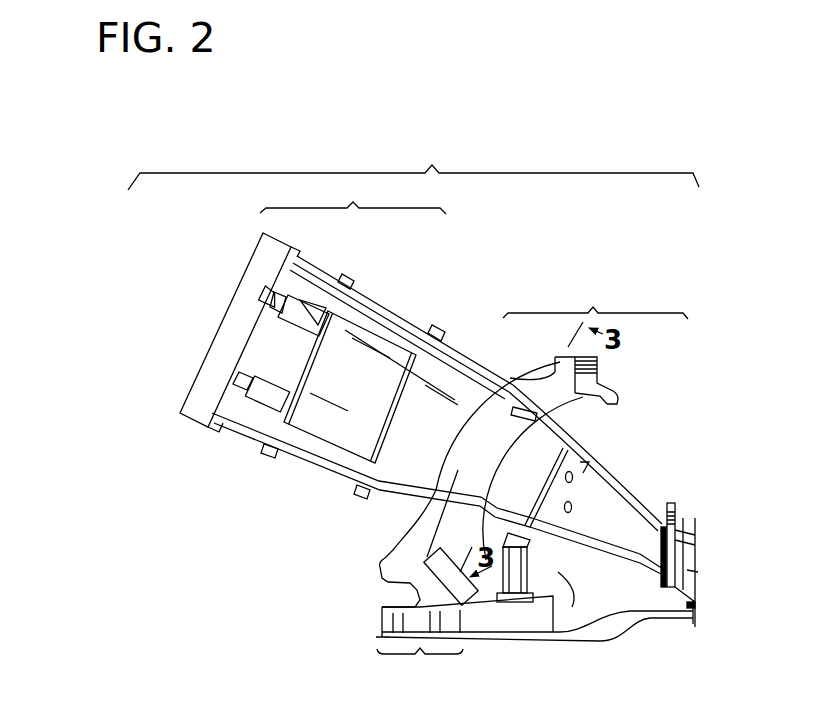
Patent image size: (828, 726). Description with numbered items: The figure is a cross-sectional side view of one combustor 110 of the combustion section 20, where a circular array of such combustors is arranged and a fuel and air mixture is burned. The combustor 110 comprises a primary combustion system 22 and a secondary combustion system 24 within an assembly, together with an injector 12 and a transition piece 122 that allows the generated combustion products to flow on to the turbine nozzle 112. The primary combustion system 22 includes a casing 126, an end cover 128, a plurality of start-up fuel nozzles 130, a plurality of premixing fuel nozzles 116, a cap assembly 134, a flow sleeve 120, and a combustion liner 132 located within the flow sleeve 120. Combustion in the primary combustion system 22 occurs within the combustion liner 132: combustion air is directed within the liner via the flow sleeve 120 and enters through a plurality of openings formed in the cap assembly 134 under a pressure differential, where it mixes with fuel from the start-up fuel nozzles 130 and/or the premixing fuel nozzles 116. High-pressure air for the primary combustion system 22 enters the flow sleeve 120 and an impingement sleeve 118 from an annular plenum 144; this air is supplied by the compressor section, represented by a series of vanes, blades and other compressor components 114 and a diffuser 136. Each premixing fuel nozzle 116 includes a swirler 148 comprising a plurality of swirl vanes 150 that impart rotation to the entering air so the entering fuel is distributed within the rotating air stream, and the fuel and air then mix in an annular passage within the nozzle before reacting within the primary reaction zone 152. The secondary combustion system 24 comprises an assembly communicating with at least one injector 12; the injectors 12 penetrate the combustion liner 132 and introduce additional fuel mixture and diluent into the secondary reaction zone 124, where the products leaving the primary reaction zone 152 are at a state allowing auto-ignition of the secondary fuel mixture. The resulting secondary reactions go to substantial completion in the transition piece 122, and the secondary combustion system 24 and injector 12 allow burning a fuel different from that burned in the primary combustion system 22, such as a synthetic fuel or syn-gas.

The combustion section 20 is at (413, 161).
The primary combustion system 22 is at (353, 195).
The secondary combustion system 24 is at (595, 298).
The injector 12 is at (596, 483).
The combustor 110 is at (512, 270).
The turbine nozzle 112 is at (695, 603).
The compressor components 114 is at (488, 617).
The premixing fuel nozzle 116 is at (260, 365).
The impingement sleeve 118 is at (636, 491).
The flow sleeve 120 is at (240, 433).
The transition piece 122 is at (614, 470).
The secondary reaction zone 124 is at (585, 458).
The casing 126 is at (385, 312).
The end cover 128 is at (198, 378).
The start-up fuel nozzle 130 is at (278, 284).
The combustion liner 132 is at (307, 454).
The cap assembly 134 is at (304, 380).
The diffuser 136 is at (591, 632).
The annular plenum 144 is at (565, 572).
The swirler 148 is at (312, 303).
The swirl vanes 150 is at (327, 290).
The primary reaction zone 152 is at (382, 350).